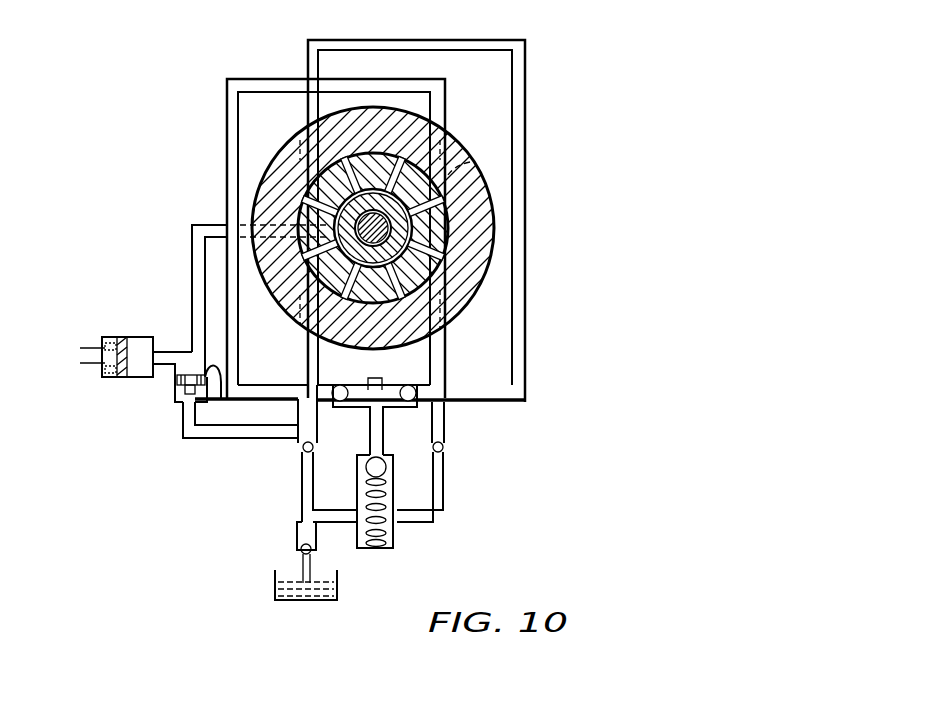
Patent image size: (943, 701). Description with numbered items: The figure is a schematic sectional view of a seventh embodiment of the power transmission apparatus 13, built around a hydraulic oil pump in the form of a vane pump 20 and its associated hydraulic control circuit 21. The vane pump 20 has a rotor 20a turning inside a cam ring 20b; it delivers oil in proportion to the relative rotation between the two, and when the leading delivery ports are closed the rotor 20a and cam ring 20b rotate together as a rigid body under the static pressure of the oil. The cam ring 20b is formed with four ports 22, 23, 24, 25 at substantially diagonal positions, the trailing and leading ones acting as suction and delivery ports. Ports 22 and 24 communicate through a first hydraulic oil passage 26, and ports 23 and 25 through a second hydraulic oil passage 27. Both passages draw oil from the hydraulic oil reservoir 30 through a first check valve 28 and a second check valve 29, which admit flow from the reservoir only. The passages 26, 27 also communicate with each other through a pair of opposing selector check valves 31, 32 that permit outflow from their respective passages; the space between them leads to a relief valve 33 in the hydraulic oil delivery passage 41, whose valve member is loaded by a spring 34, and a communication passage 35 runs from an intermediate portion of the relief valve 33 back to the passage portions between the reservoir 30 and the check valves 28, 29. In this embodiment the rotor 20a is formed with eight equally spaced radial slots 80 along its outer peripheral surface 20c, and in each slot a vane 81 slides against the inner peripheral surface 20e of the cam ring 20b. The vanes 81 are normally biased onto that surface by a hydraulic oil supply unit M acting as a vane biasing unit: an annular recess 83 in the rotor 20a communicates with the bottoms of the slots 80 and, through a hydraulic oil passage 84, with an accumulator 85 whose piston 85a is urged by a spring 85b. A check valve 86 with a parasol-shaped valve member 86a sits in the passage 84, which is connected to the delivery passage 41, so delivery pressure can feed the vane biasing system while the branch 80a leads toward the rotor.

The power transmission apparatus 13 is at (545, 76).
The vane pump 20 is at (498, 218).
The rotor 20a is at (450, 243).
The cam ring 20b is at (470, 295).
The outer peripheral surface 20c is at (387, 133).
The inner peripheral surface 20e is at (368, 140).
The hydraulic control circuit 21 is at (532, 407).
The port 22 is at (292, 323).
The port 23 is at (298, 130).
The port 24 is at (470, 162).
The port 25 is at (448, 322).
The first hydraulic oil passage 26 is at (263, 79).
The second hydraulic oil passage 27 is at (455, 40).
The first check valve 28 is at (303, 447).
The second check valve 29 is at (442, 447).
The hydraulic oil reservoir 30 is at (276, 592).
The selector check valve 31 is at (348, 374).
The selector check valve 32 is at (412, 386).
The relief valve 33 is at (405, 492).
The spring 34 is at (383, 522).
The communication passage 35 is at (347, 510).
The hydraulic oil delivery passage 41 is at (386, 432).
The radial slots 80 is at (350, 188).
The control passage branch 80a is at (330, 213).
The vane 81 is at (442, 101).
The annular recess 83 is at (300, 300).
The hydraulic oil passage 84 is at (192, 266).
The accumulator 85 is at (142, 337).
The piston 85a is at (122, 337).
The spring 85b is at (103, 350).
The check valve 86 is at (176, 393).
The parasol-shaped valve member 86a is at (240, 418).
The hydraulic oil supply unit M is at (125, 380).